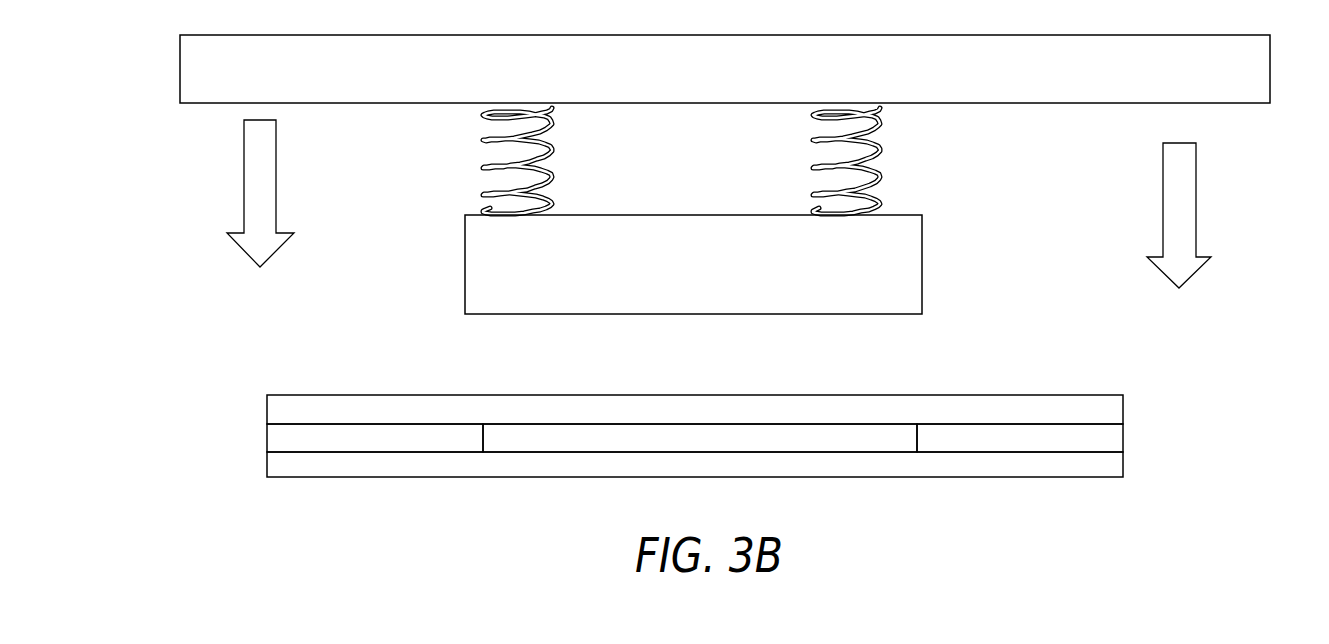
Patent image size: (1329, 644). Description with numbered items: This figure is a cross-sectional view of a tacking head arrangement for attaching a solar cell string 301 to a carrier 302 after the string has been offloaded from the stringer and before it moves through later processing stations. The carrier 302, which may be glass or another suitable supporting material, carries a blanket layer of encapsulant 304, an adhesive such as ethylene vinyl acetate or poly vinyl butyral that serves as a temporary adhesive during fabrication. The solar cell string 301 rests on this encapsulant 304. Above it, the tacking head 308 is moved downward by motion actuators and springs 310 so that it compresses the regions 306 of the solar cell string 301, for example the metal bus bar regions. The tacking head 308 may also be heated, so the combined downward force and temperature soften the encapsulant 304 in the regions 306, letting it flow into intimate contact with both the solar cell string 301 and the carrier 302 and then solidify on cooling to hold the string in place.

The solar cell string 301 is at (388, 412).
The carrier 302 is at (370, 463).
The encapsulant 304 is at (291, 438).
The regions 306 is at (677, 437).
The tacking head 308 is at (699, 274).
The springs 310 is at (878, 167).